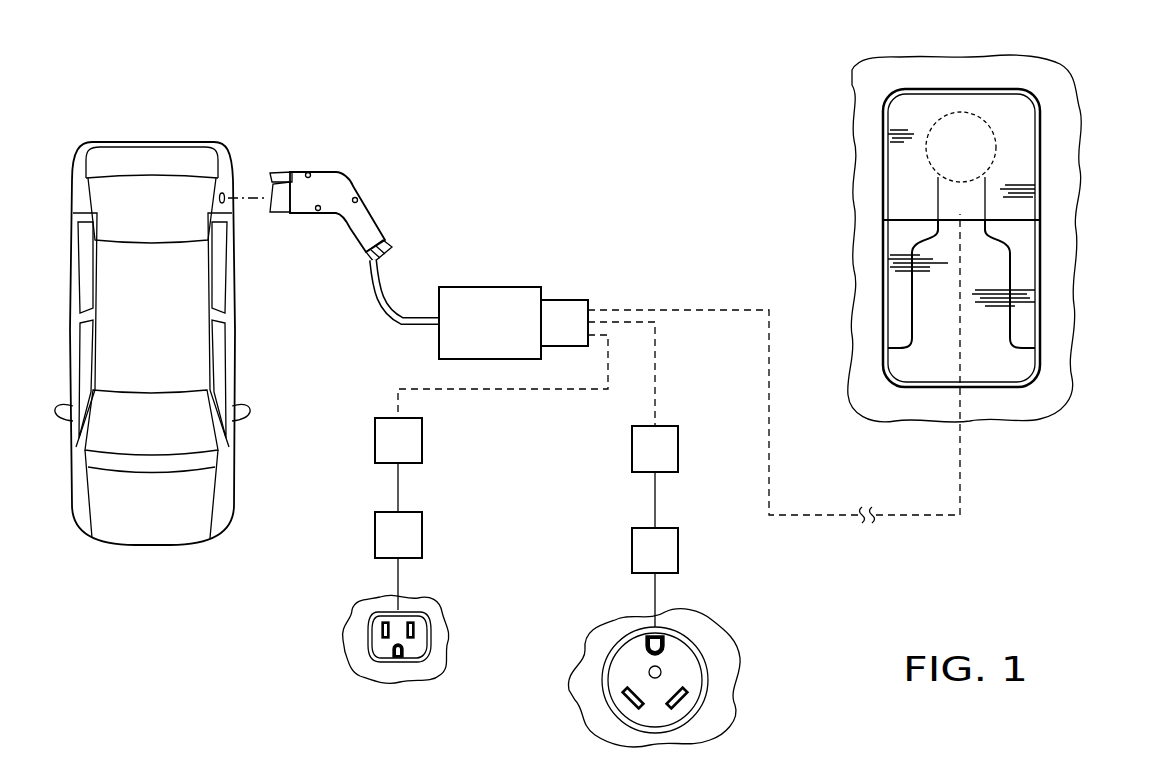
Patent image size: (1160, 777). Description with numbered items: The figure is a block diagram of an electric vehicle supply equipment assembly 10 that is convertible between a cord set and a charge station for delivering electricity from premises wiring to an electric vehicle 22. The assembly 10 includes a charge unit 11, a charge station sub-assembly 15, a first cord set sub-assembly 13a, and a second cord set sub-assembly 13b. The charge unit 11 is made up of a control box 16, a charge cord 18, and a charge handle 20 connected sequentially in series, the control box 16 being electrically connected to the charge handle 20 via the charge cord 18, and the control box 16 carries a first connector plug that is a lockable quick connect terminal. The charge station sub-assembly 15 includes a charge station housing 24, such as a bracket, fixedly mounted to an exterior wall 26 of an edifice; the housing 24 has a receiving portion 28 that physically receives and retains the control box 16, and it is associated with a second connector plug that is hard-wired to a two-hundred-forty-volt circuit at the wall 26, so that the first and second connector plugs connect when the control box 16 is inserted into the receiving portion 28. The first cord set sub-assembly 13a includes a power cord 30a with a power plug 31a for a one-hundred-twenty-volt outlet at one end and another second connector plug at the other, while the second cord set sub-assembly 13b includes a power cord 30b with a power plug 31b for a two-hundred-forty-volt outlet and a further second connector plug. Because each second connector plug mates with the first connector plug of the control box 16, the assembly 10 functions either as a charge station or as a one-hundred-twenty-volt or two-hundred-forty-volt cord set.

The electric vehicle supply equipment (EVSE) assembly 10 is at (634, 97).
The charge unit 11 is at (458, 193).
The first cord set sub-assembly 13a is at (393, 565).
The second cord set sub-assembly 13b is at (655, 599).
The charge station sub-assembly 15 is at (1050, 141).
The control box 16 is at (490, 287).
The charge cord 18 is at (397, 305).
The charge handle 20 is at (308, 172).
The electric vehicle 22 is at (137, 142).
The charge station housing 24 is at (1050, 237).
The exterior wall 26 is at (973, 70).
The receiving portion 28 is at (1043, 290).
The power cord 30a is at (398, 491).
The power cord 30b is at (655, 505).
The power plug 31a is at (422, 537).
The power plug 31b is at (678, 550).